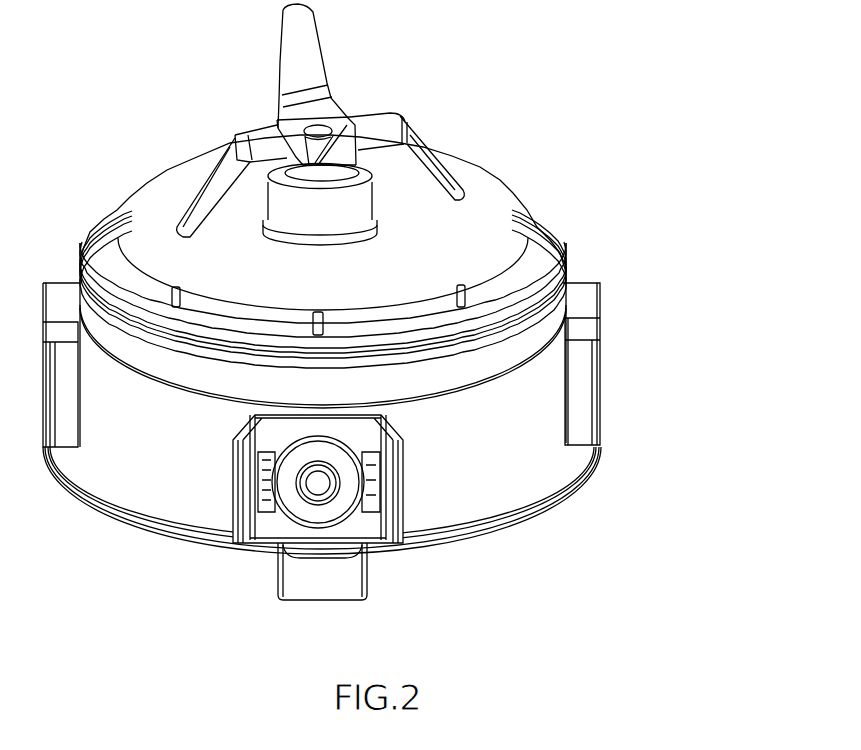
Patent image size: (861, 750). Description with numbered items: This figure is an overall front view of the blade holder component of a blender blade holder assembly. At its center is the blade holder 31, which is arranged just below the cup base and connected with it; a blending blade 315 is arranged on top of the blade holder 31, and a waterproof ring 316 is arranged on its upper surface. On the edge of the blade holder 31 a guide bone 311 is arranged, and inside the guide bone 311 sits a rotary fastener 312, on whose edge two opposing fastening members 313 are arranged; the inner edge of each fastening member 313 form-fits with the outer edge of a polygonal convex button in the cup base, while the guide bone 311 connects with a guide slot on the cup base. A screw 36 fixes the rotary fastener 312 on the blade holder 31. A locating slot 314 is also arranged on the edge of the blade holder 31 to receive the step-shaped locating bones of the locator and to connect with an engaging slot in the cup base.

The blade holder 31 is at (433, 275).
The guide bone 311 is at (407, 445).
The rotary fastener 312 is at (358, 480).
The fastening member 313 is at (413, 523).
The locating slot 314 is at (575, 353).
The blending blade 315 is at (358, 151).
The waterproof ring 316 is at (563, 273).
The screw 36 is at (322, 490).